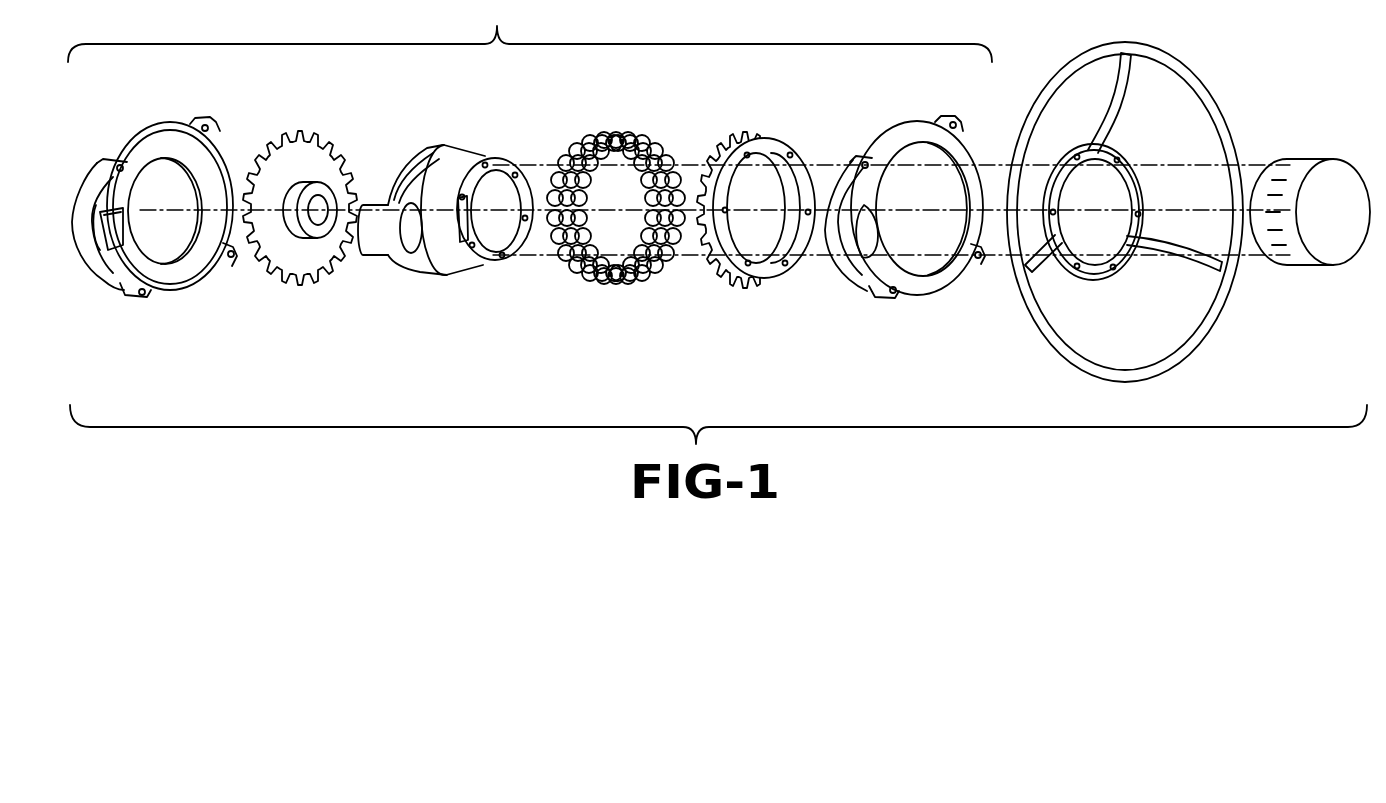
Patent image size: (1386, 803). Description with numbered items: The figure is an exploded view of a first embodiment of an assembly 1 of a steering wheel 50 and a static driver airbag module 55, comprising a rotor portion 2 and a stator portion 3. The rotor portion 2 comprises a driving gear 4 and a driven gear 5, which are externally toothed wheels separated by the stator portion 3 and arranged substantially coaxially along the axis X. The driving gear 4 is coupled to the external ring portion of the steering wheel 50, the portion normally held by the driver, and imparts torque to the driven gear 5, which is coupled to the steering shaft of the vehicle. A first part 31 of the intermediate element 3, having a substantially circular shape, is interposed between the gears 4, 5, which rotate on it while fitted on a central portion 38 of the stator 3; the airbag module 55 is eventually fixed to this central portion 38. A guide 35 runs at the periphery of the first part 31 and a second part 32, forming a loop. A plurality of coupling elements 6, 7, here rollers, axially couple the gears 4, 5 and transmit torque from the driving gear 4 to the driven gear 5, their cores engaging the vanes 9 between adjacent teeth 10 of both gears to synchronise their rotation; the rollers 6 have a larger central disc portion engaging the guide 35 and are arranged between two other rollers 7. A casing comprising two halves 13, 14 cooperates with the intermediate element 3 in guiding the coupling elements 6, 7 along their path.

The assembly 1 is at (717, 222).
The axis X is at (167, 208).
The casing half 13 is at (197, 292).
The rotor portion 2 is at (318, 298).
The vanes 9 is at (285, 138).
The teeth 10 is at (302, 140).
The driven gear 5 is at (267, 272).
The stator portion 3 is at (445, 223).
The first part 31 is at (447, 155).
The second part 32 is at (403, 250).
The guide 35 is at (413, 175).
The central portion 38 is at (490, 256).
The rollers 6 is at (628, 140).
The rollers 7 is at (648, 143).
The driving gear 4 is at (797, 265).
The casing half 14 is at (940, 278).
The steering wheel 50 is at (1205, 102).
The static driver airbag module 55 is at (1330, 185).